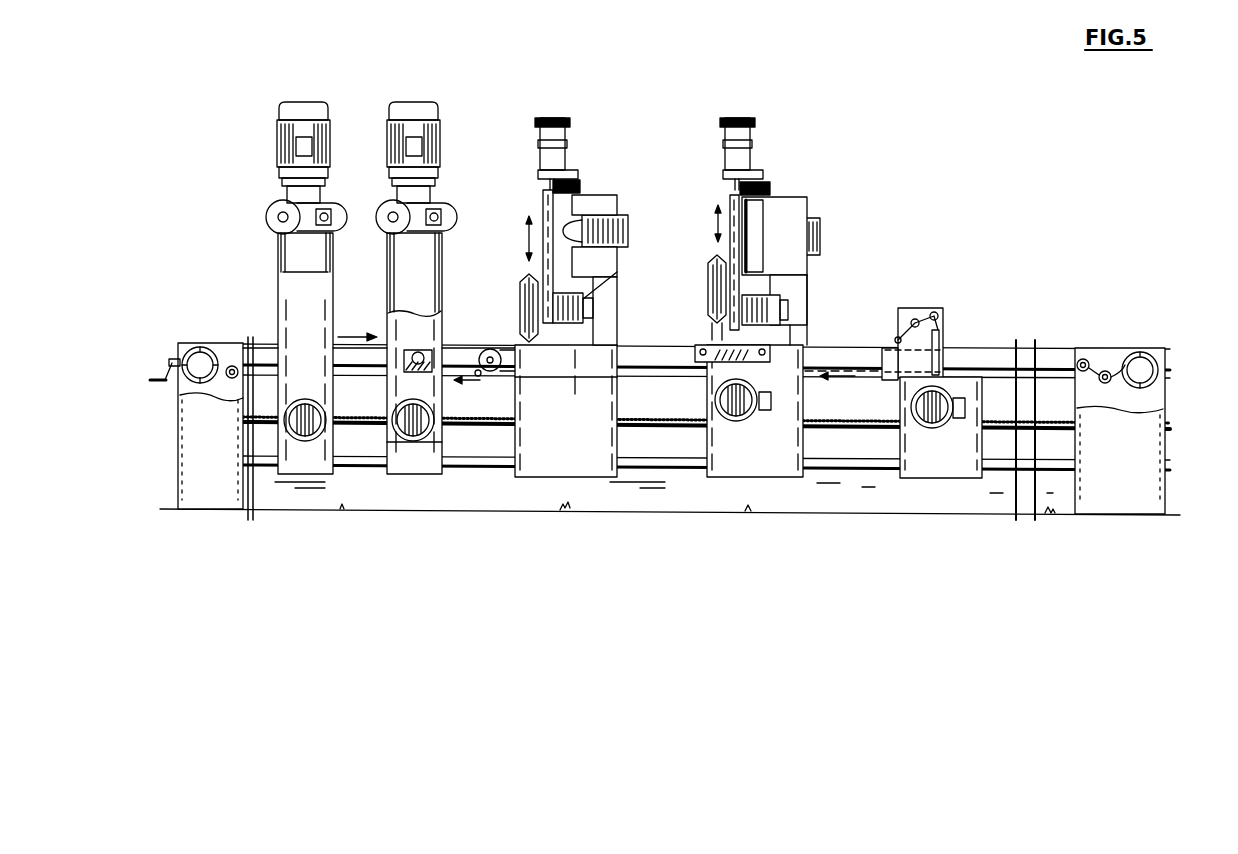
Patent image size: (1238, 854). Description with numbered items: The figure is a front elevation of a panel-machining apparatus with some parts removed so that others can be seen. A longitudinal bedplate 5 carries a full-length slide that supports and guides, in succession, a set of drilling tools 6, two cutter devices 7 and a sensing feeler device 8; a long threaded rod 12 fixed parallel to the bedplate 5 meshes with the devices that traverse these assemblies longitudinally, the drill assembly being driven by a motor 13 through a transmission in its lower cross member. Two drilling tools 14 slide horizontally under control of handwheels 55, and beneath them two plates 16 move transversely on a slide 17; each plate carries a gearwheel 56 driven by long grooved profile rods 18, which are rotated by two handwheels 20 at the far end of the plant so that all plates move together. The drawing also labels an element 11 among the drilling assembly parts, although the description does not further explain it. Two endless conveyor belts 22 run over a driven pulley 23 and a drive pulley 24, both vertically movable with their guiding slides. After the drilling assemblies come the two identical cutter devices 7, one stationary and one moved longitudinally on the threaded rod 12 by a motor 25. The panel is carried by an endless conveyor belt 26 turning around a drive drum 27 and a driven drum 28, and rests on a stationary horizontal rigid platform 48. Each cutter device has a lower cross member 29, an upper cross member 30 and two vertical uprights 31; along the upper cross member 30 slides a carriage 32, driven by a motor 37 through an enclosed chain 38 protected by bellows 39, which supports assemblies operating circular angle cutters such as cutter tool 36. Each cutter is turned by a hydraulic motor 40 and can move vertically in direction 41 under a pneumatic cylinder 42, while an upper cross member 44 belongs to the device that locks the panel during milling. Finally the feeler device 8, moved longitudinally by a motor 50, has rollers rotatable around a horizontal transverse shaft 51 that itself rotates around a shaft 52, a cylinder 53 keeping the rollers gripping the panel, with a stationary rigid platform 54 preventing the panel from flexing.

The bedplate 5 is at (313, 490).
The set of drilling tools 6 is at (426, 97).
The cutter devices 7 is at (618, 301).
The sensing feeler device 8 is at (940, 191).
The column 11 is at (348, 326).
The threaded rod 12 is at (265, 340).
The motor 13 is at (410, 415).
The drilling tools 14 is at (308, 113).
The plates 16 is at (470, 420).
The slide 17 is at (420, 445).
The grooved profile rods 18 is at (352, 366).
The handwheels 20 is at (170, 378).
The conveyor belts 22 is at (260, 346).
The driven pulley 23 is at (513, 346).
The drive pulley 24 is at (180, 348).
The motor 25 is at (835, 465).
The endless conveyor belt 26 is at (655, 347).
The drive drum 27 is at (1160, 348).
The driven drum 28 is at (613, 363).
The lower cross member 29 is at (875, 432).
The upper cross member 30 is at (783, 207).
The vertical uprights 31 is at (790, 303).
The carriage 32 is at (763, 180).
The cutter tool 36 is at (565, 330).
The motor 37 is at (620, 217).
The enclosed chain 38 is at (573, 187).
The bellows 39 is at (551, 182).
The hydraulic motor 40 is at (565, 305).
The vertical direction 41 is at (612, 233).
The pneumatic cylinder 42 is at (545, 117).
The upper cross member 44 is at (528, 337).
The stationary horizontal rigid platform 48 is at (553, 350).
The motor 50 is at (945, 415).
The horizontal transverse shaft 51 is at (898, 340).
The horizontal transverse shaft 52 is at (943, 330).
The cylinder 53 is at (947, 353).
The stationary horizontal rigid platform 54 is at (912, 420).
The handwheels 55 is at (280, 206).
The gearwheel 56 is at (425, 338).